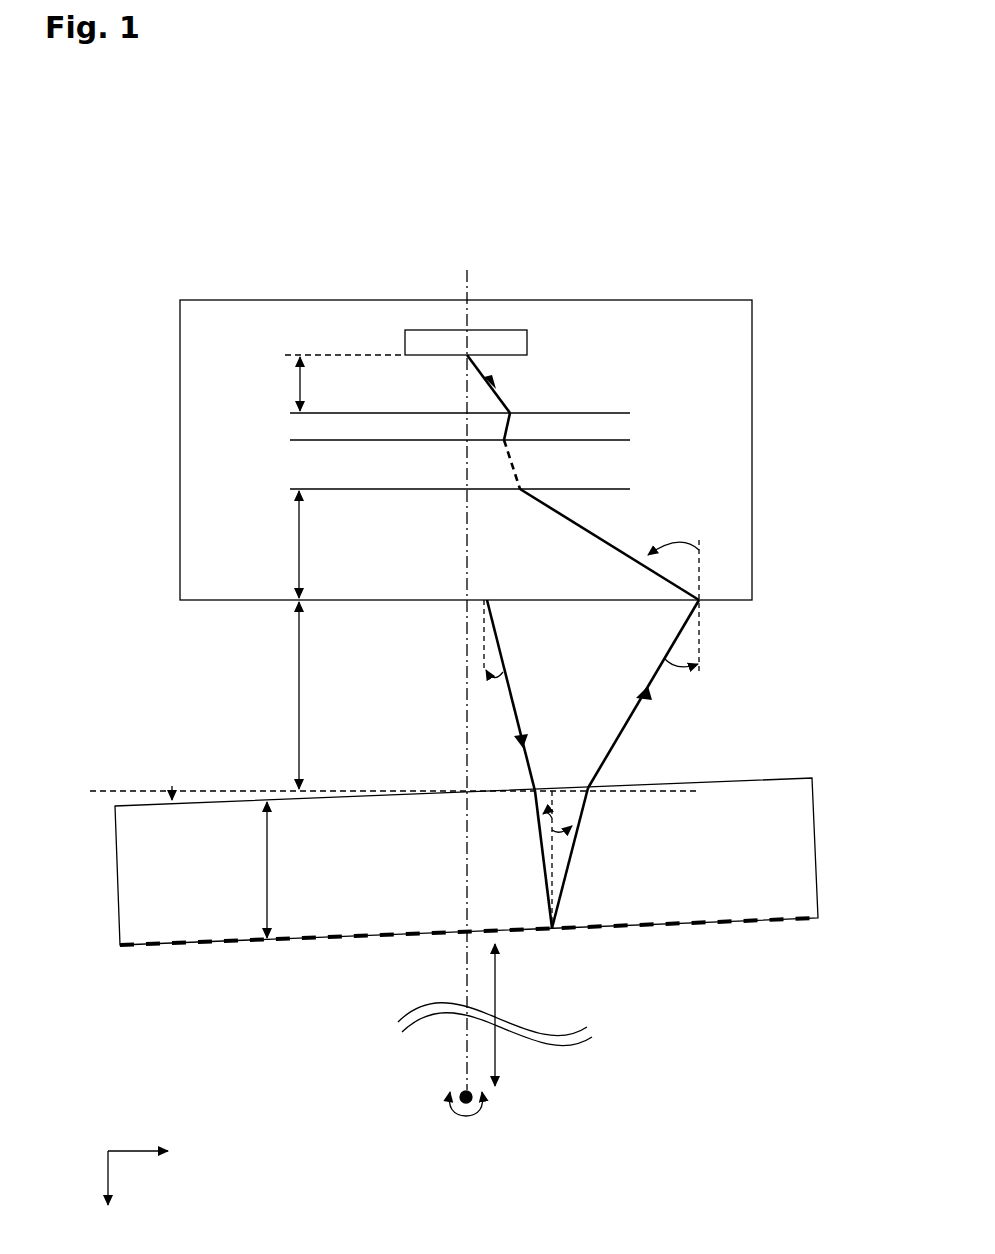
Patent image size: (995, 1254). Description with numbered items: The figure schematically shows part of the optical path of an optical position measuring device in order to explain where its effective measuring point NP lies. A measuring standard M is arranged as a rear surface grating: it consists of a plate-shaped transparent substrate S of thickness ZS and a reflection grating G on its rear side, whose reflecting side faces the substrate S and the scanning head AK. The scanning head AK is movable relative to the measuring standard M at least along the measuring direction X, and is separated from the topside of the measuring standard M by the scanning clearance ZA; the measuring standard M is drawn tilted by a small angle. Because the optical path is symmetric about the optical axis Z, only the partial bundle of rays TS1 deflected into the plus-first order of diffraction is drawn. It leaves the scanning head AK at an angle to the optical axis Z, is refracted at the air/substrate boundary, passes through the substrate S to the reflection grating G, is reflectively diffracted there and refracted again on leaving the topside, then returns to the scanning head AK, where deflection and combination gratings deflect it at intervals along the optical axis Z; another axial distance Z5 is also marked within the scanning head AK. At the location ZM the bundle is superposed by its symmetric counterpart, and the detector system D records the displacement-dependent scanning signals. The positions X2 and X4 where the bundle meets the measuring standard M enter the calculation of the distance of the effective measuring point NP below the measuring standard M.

The scanning head AK is at (168, 400).
The detector system D is at (505, 337).
The partial bundle of rays TS1 is at (507, 645).
The substrate S is at (806, 858).
The reflection grating G is at (218, 946).
The measuring standard M is at (115, 958).
The effective measuring point NP is at (442, 1100).
The superposition location ZM is at (329, 383).
The distance Z_5 Z5 is at (276, 544).
The scanning clearance ZA is at (395, 696).
The substrate thickness ZS is at (251, 870).
The distance X2 is at (547, 772).
The distance X4 is at (623, 772).
The measuring direction X is at (145, 1132).
The optical axis Z is at (89, 1189).